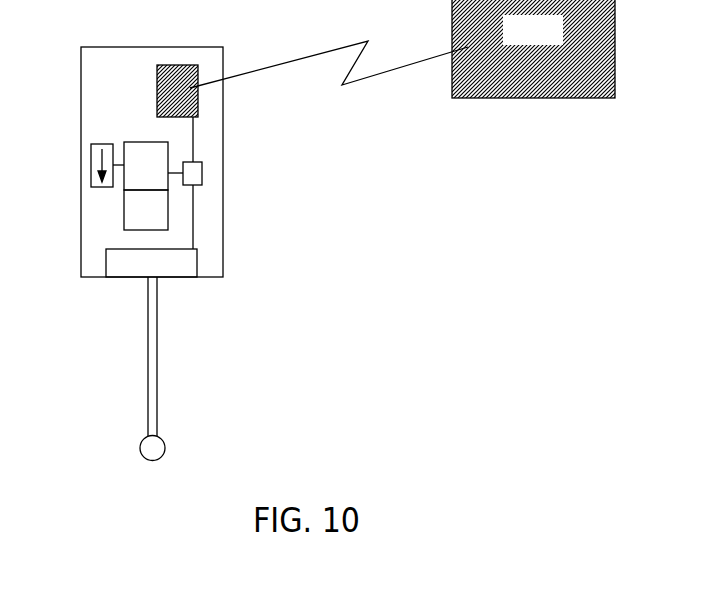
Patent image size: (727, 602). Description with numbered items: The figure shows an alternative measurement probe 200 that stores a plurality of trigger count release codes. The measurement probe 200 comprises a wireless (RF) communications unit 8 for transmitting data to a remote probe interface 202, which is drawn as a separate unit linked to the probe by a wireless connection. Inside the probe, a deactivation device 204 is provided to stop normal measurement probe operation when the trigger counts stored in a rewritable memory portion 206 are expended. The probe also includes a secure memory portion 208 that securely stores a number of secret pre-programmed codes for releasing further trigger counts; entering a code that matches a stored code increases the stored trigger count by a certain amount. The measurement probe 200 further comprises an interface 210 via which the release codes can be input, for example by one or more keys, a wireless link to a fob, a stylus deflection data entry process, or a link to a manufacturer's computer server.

The wireless (RF) communications unit 8 is at (203, 73).
The measurement probe 200 is at (262, 318).
The remote probe interface 202 is at (558, 44).
The deactivation device 204 is at (203, 173).
The rewritable memory portion 206 is at (159, 219).
The secure memory portion 208 is at (159, 179).
The interface 210 is at (91, 173).